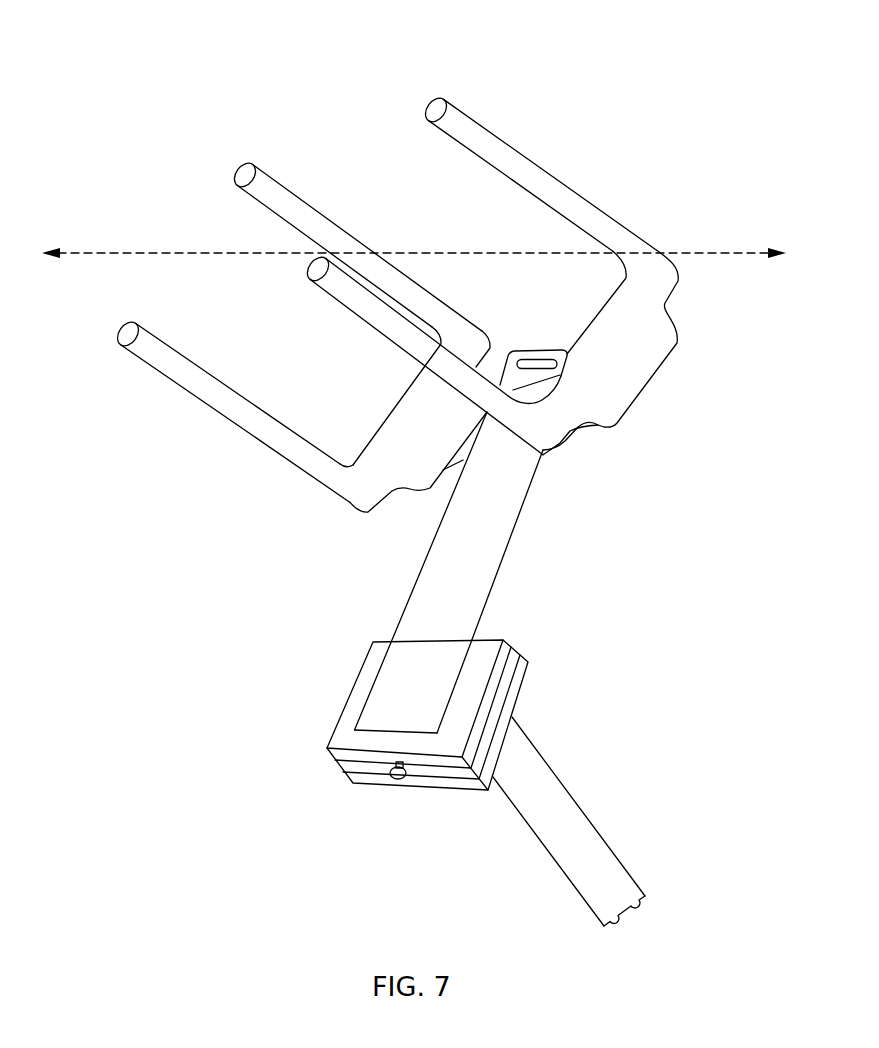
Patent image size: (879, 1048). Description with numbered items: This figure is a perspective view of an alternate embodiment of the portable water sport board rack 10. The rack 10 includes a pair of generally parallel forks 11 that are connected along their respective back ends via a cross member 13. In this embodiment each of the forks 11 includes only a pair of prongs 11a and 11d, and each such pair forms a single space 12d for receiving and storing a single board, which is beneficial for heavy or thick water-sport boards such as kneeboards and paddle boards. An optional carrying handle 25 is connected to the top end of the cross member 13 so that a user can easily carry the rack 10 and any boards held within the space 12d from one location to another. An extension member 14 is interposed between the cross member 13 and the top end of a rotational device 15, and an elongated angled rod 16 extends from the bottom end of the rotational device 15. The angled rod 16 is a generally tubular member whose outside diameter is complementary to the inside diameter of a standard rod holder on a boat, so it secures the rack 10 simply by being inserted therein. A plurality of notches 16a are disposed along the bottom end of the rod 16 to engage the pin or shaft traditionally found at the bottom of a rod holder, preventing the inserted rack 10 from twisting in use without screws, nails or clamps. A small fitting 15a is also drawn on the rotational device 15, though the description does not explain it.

The rack 10 is at (115, 67).
The forks 11 is at (630, 375).
The prong 11a is at (468, 133).
The prong 11d is at (345, 287).
The space 12d is at (678, 253).
The cross member 13 is at (487, 414).
The extension member 14 is at (486, 538).
The rotational device 15 is at (513, 650).
The knob 15a is at (390, 772).
The angled rod 16 is at (538, 788).
The notches 16a is at (643, 903).
The carrying handle 25 is at (537, 358).